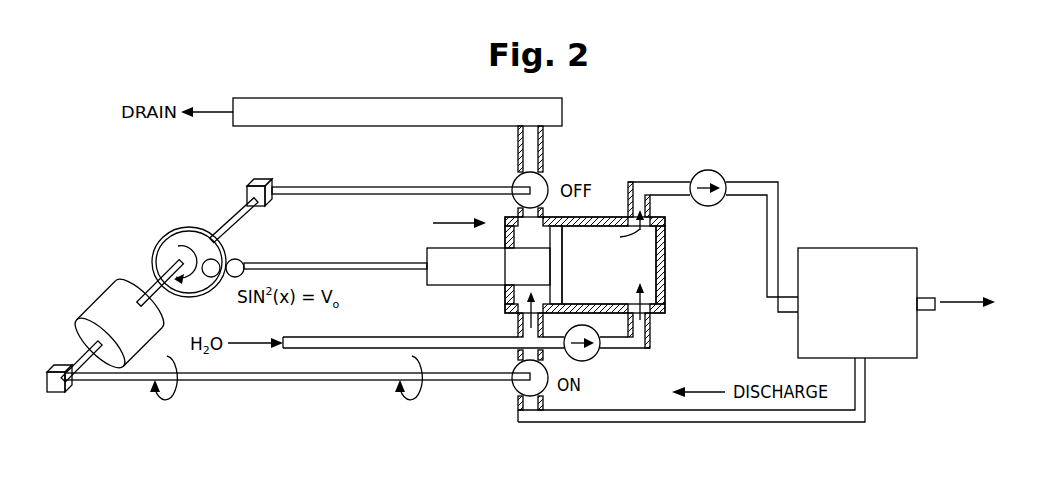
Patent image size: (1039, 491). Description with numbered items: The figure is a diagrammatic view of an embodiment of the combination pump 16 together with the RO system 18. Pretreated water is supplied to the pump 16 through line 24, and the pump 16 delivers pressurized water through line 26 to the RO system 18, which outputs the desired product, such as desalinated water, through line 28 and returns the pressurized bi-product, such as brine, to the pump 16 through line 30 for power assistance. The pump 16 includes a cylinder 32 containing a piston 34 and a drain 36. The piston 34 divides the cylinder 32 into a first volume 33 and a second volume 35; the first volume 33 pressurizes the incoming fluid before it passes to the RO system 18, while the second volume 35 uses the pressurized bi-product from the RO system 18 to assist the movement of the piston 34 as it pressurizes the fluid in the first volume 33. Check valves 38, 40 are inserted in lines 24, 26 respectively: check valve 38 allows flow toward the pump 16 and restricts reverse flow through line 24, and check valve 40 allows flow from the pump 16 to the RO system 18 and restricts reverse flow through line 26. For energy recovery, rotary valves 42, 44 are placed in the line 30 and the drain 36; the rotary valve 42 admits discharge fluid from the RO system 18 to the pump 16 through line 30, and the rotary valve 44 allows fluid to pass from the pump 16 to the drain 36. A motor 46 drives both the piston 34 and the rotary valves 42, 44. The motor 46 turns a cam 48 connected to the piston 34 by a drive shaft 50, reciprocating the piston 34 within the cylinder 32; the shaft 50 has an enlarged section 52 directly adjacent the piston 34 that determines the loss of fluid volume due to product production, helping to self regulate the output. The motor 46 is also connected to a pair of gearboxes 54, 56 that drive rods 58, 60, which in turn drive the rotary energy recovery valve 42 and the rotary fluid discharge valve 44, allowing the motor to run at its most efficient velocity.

The pump 16 is at (621, 136).
The RO system 18 is at (858, 248).
The line 24 is at (408, 337).
The line 26 is at (742, 182).
The line 28 is at (966, 329).
The line 30 is at (647, 423).
The cylinder 32 is at (605, 217).
The first volume 33 is at (615, 285).
The piston 34 is at (552, 266).
The second volume 35 is at (506, 216).
The drain 36 is at (337, 97).
The check valve 38 is at (596, 358).
The check valve 40 is at (705, 171).
The rotary valve 42 is at (513, 392).
The rotary valve 44 is at (515, 185).
The motor 46 is at (92, 309).
The cam 48 is at (180, 230).
The drive shaft 50 is at (360, 262).
The enlarged section 52 is at (448, 270).
The gearbox 54 is at (62, 395).
The gearbox 56 is at (250, 184).
The rod 58 is at (290, 383).
The rod 60 is at (383, 186).